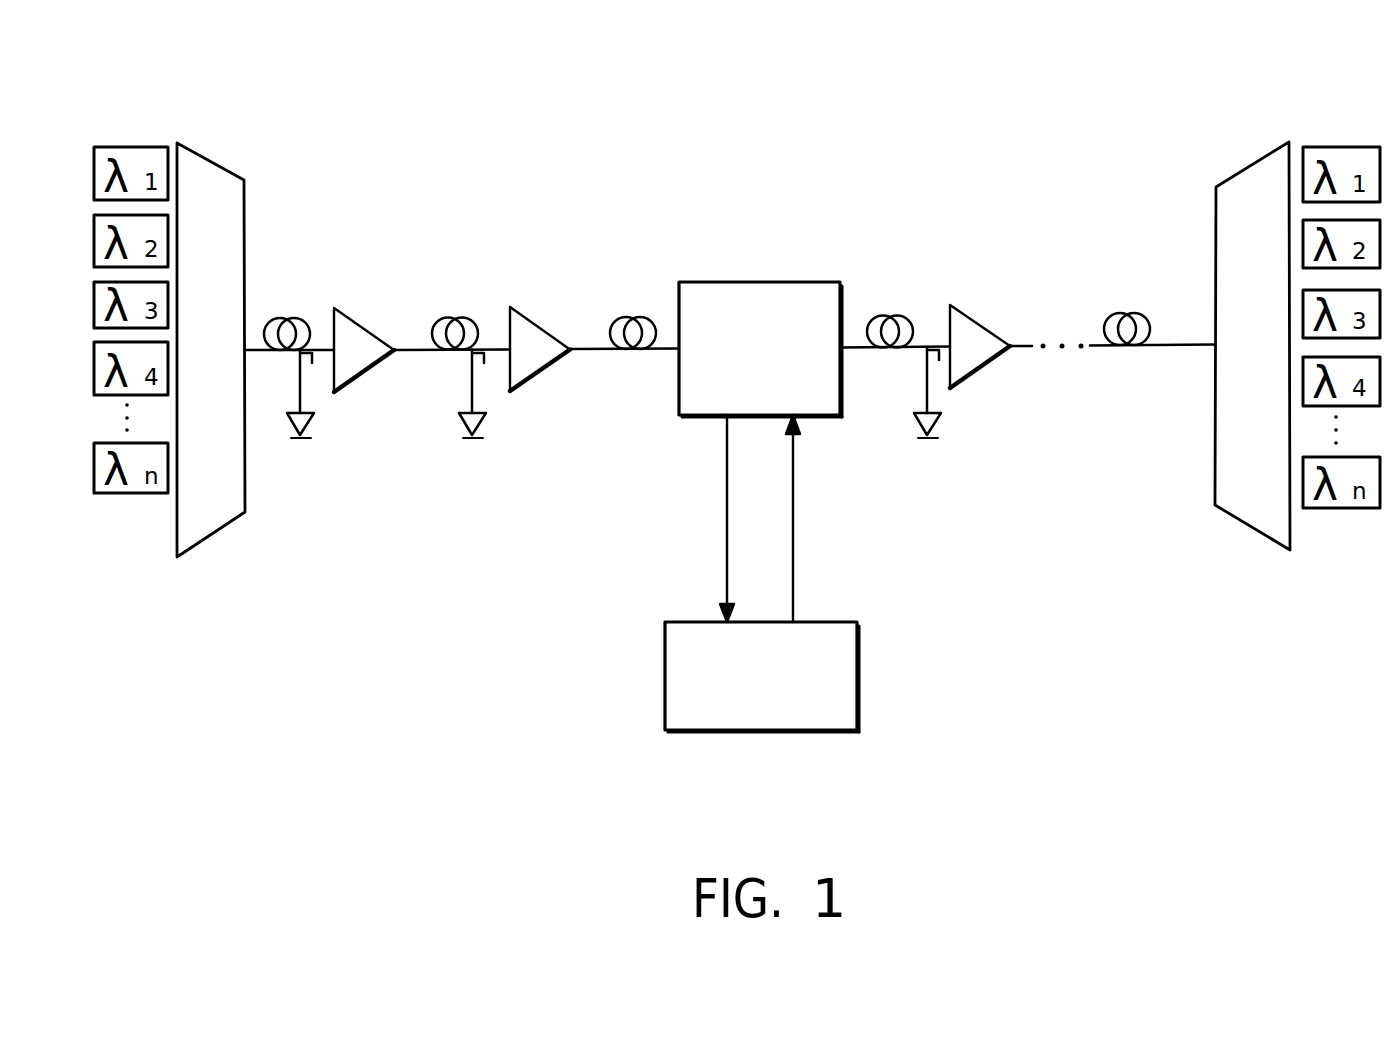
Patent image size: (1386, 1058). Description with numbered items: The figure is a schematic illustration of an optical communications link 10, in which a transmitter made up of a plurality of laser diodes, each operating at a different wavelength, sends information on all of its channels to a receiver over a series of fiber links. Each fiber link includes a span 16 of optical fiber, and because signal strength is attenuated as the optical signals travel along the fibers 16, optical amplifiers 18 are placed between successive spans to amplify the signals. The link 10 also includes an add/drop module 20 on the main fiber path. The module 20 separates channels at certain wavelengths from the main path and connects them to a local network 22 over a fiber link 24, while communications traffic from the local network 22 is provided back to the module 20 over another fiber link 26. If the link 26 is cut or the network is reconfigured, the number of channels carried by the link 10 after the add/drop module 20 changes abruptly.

The communications link 10 is at (921, 93).
The span of optical fiber 16 is at (289, 297).
The optical amplifier 18 is at (360, 378).
The add/drop module 20 is at (783, 282).
The local network 22 is at (860, 672).
The fiber link 24 is at (723, 518).
The fiber link 26 is at (797, 518).